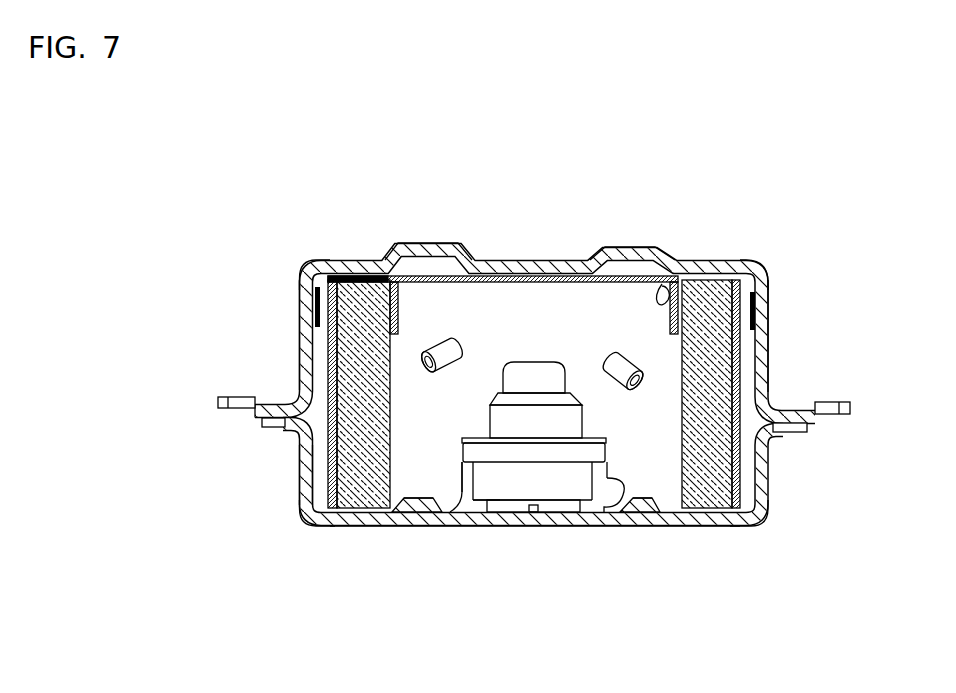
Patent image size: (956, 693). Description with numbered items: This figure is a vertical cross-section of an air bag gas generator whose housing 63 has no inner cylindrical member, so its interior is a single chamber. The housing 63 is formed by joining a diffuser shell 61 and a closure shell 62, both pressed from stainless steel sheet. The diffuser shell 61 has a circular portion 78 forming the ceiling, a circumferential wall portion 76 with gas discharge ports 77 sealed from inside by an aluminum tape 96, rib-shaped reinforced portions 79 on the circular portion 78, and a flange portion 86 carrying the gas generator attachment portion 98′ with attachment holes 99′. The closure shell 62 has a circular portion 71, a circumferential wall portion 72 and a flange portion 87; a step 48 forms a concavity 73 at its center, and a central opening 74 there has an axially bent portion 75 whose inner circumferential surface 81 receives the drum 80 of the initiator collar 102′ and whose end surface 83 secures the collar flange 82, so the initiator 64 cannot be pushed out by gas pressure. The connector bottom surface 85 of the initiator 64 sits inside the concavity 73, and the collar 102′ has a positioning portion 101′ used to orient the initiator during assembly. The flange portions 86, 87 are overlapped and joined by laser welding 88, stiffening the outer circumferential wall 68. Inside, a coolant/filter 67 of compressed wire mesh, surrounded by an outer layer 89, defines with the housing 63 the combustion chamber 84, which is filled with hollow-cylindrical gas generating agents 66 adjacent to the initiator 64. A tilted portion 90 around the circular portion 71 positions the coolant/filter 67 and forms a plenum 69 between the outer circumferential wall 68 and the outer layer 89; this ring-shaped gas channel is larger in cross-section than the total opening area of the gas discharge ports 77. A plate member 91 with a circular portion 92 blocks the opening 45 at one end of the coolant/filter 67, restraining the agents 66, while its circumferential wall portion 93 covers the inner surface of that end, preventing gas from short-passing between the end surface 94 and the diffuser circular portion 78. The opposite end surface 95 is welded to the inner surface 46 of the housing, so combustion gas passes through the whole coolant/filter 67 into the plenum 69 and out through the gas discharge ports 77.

The opening 45 is at (707, 253).
The inner surface of the housing 46 is at (657, 518).
The step 48 is at (402, 508).
The diffuser shell 61 is at (673, 278).
The closure shell 62 is at (350, 535).
The housing 63 is at (612, 228).
The initiator 64 is at (497, 302).
The solid gas generating agents 66 is at (460, 338).
The coolant/filter 67 is at (670, 472).
The outer circumferential wall 68 is at (776, 333).
The plenum 69 is at (752, 262).
The circular portion 71 is at (333, 527).
The circumferential wall portion 72 is at (303, 500).
The concavity 73 is at (428, 500).
The central opening 74 is at (466, 502).
The bent portion 75 is at (614, 499).
The circumferential wall portion 76 is at (300, 341).
The gas discharge ports 77 is at (316, 298).
The circular portion 78 is at (348, 274).
The reinforced portions 79 is at (481, 262).
The drum 80 is at (560, 484).
The inner circumferential surface 81 is at (588, 478).
The flange 82 is at (606, 460).
The end surface 83 is at (463, 462).
The combustion chamber 84 is at (538, 366).
The connector bottom surface 85 is at (513, 513).
The flange portion 86 is at (281, 397).
The flange portion 87 is at (268, 428).
The laser welding 88 is at (254, 412).
The outer layer 89 is at (733, 455).
The tilted portion 90 is at (302, 468).
The plate member 91 is at (434, 267).
The circular portion 92 is at (620, 353).
The circumferential wall portion 93 is at (662, 284).
The end surface 94 is at (380, 273).
The end surface 95 is at (697, 523).
The aluminum tape 96 is at (312, 262).
The gas generator attachment portion 98′ is at (805, 404).
The attachment holes 99′ is at (830, 417).
The positioning portion 101′ is at (534, 513).
The initiator collar 102′ is at (486, 501).